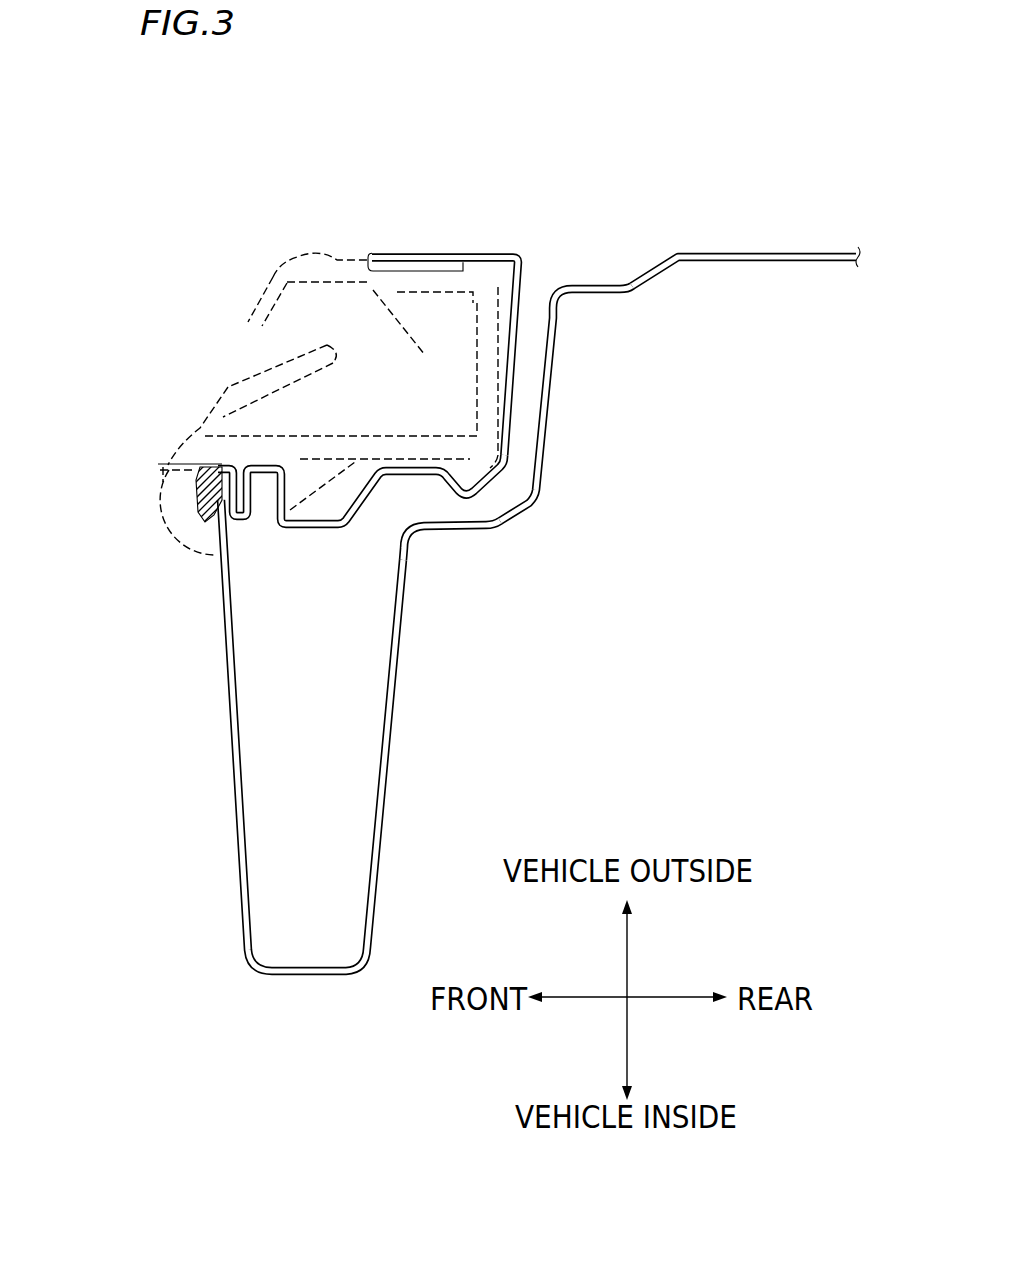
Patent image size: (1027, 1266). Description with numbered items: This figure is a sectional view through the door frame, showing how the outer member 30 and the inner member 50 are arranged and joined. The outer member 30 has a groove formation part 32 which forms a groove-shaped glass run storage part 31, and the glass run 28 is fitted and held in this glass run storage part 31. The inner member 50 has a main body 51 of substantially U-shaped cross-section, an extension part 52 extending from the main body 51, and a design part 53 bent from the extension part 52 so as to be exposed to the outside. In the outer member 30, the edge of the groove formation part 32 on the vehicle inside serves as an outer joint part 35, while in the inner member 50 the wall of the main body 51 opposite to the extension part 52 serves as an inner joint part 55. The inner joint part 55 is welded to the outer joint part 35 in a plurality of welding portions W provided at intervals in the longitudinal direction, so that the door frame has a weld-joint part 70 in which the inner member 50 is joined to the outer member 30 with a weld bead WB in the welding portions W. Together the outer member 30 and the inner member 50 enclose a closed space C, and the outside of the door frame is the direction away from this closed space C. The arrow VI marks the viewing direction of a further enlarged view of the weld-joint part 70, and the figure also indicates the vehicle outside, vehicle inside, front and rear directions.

The glass run 28 is at (277, 275).
The outer member 30 is at (415, 301).
The glass run storage part 31 is at (392, 375).
The groove formation part 32 is at (527, 280).
The outer joint part 35 is at (218, 465).
The inner member 50 is at (480, 555).
The main body 51 is at (393, 770).
The extension part 52 is at (498, 528).
The design part 53 is at (732, 252).
The inner joint part 55 is at (228, 755).
The weld-joint part 70 is at (186, 438).
The welding portions W is at (188, 480).
The weld bead WB is at (193, 513).
The closed space C is at (345, 707).
The section line VI is at (110, 473).